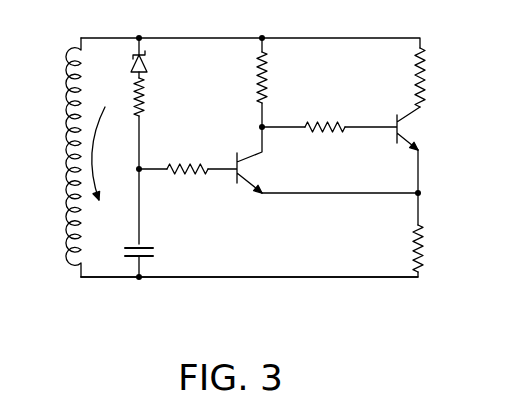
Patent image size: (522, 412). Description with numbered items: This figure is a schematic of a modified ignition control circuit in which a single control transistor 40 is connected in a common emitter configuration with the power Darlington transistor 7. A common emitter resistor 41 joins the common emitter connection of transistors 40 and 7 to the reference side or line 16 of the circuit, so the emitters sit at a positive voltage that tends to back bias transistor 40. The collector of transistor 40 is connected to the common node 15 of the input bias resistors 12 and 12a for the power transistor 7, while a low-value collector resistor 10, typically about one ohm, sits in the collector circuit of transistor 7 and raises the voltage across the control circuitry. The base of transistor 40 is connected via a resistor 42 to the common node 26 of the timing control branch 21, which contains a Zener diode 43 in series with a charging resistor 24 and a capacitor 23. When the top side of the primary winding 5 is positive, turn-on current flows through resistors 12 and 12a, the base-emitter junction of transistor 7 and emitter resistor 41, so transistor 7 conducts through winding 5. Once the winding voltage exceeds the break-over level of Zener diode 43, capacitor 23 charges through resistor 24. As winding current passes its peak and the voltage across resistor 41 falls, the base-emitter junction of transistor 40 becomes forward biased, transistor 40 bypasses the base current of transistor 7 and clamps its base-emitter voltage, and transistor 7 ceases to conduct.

The primary winding 5 is at (63, 60).
The Zener diode 43 is at (147, 62).
The charging resistor 24 is at (146, 97).
The timing control branch 21 is at (137, 150).
The common node 26 is at (141, 167).
The resistor 42 is at (178, 175).
The capacitor 23 is at (155, 253).
The input bias resistor 12 is at (265, 78).
The common node 15 is at (262, 127).
The input bias resistor 12a is at (321, 126).
The control transistor 40 is at (252, 171).
The reference side or line 16 is at (300, 277).
The power Darlington transistor 7 is at (408, 133).
The collector resistor 10 is at (428, 50).
The common emitter resistor 41 is at (424, 262).